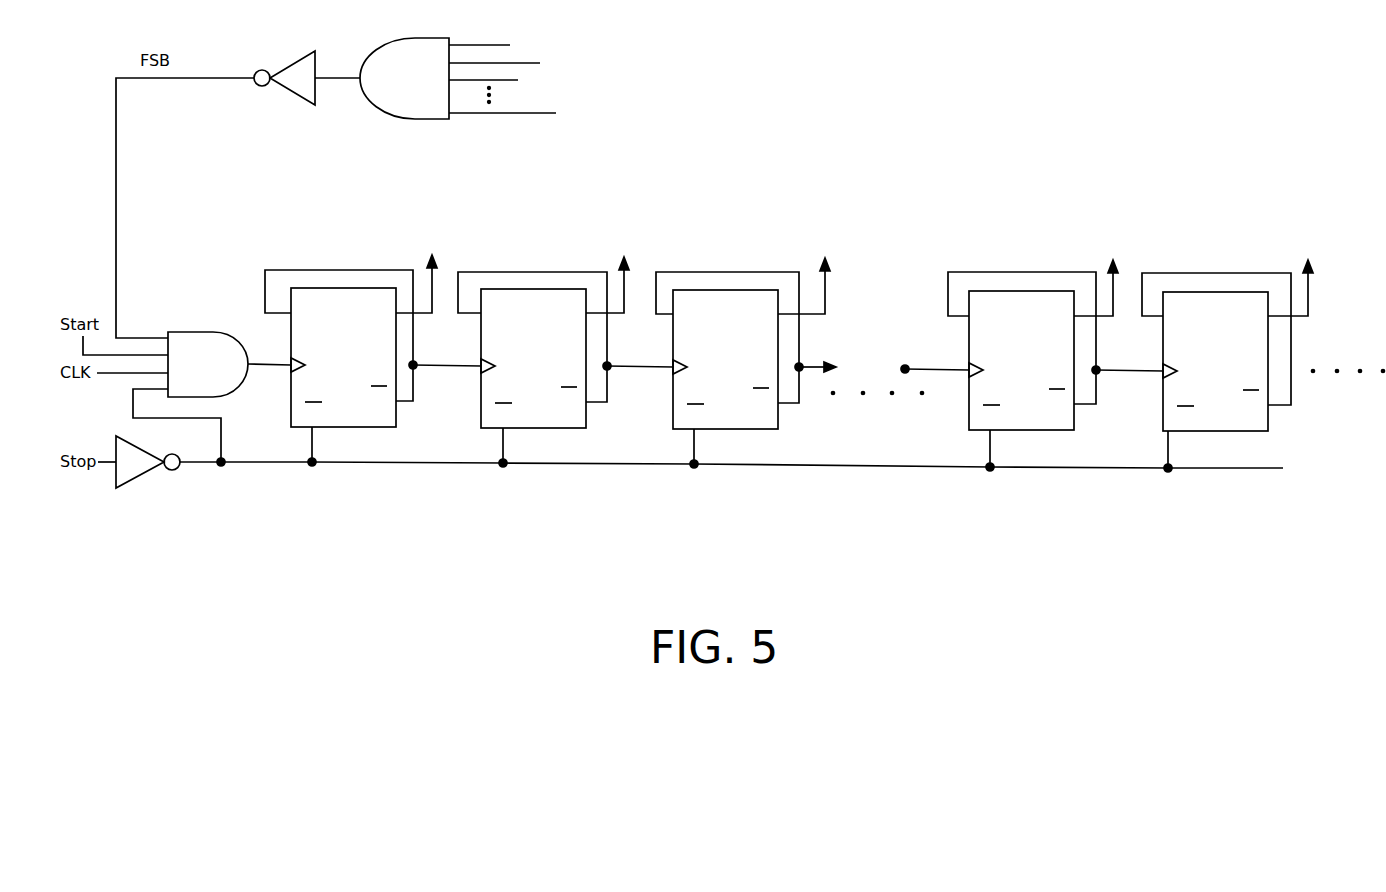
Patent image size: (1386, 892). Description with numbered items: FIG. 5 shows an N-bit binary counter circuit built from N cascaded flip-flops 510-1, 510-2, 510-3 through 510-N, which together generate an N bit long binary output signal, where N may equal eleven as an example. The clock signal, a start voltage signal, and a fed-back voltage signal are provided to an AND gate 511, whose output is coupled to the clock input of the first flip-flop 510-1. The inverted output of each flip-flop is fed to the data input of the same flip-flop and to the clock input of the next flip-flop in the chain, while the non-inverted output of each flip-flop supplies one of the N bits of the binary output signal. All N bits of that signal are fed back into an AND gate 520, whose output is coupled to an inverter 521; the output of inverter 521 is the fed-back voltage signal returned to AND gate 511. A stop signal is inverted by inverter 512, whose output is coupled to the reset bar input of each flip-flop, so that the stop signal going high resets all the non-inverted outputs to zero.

The AND gate 511 is at (186, 332).
The inverter 512 is at (140, 478).
The AND gate 520 is at (402, 120).
The inverter 521 is at (292, 100).
The flip-flop 510-1 is at (371, 427).
The flip-flop 510-2 is at (561, 428).
The flip-flop 510-3 is at (753, 429).
The flip-flop 510-N is at (1250, 431).